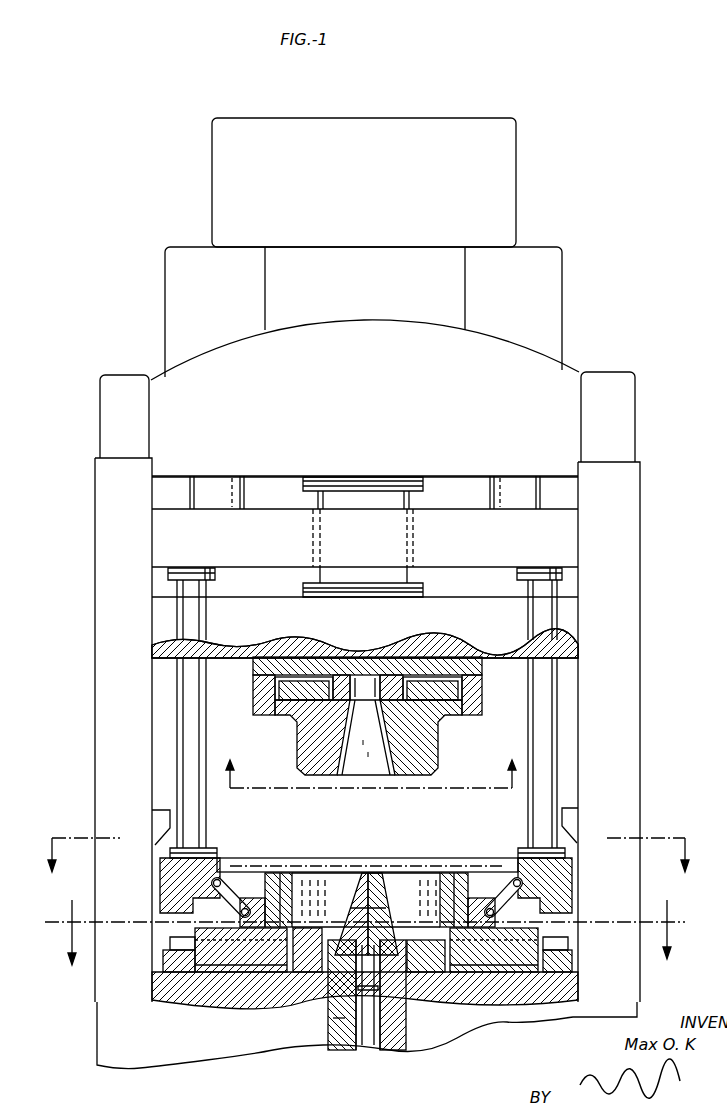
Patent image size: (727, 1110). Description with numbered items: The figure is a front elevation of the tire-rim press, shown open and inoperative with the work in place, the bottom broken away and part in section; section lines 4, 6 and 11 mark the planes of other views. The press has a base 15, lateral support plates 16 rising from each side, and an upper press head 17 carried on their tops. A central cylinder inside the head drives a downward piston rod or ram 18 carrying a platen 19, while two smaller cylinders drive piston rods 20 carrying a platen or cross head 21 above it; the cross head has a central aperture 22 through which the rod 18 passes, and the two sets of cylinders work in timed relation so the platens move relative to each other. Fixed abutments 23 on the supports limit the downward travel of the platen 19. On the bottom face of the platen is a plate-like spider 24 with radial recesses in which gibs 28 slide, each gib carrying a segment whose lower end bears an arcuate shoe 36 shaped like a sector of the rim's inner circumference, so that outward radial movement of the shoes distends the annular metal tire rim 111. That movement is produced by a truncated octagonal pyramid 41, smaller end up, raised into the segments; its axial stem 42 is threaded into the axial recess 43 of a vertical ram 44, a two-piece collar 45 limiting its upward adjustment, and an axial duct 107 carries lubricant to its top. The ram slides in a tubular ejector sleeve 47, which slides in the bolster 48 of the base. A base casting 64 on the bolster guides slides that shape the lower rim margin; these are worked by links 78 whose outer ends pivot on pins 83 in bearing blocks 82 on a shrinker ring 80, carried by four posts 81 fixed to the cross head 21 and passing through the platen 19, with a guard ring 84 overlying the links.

The section line 4- 4 is at (368, 870).
The section line 6- 6 is at (369, 763).
The section line 11- 11 is at (368, 935).
The base 15 is at (100, 1050).
The lateral support plates 16 is at (103, 615).
The upper press head 17 is at (557, 373).
The piston rod or ram 18 is at (392, 573).
The platen 19 is at (247, 610).
The piston rods 20 is at (197, 498).
The platen or cross head 21 is at (280, 552).
The central aperture 22 is at (313, 520).
The fixed abutments 23 is at (160, 810).
The plate-like spider 24 is at (265, 665).
The gib 28 is at (290, 707).
The arcuate shoe 36 is at (297, 753).
The truncated octagonal pyramid 41 is at (392, 873).
The axial stem 42 is at (332, 1005).
The axial recess 43 is at (352, 1045).
The vertical ram 44 is at (385, 1043).
The stop-ring or collar 45 is at (395, 1005).
The tubular ejector sleeve 47 is at (333, 1018).
The bolster 48 is at (262, 988).
The base casting 64 is at (418, 922).
The link 78 is at (226, 878).
The shrinker ring 80 is at (560, 880).
The stilts or posts 81 is at (183, 755).
The bearing blocks 82 is at (218, 858).
The pivot pin 83 is at (276, 873).
The guard ring 84 is at (247, 858).
The axial duct 107 is at (365, 873).
The annular metal tire rim 111 is at (300, 873).